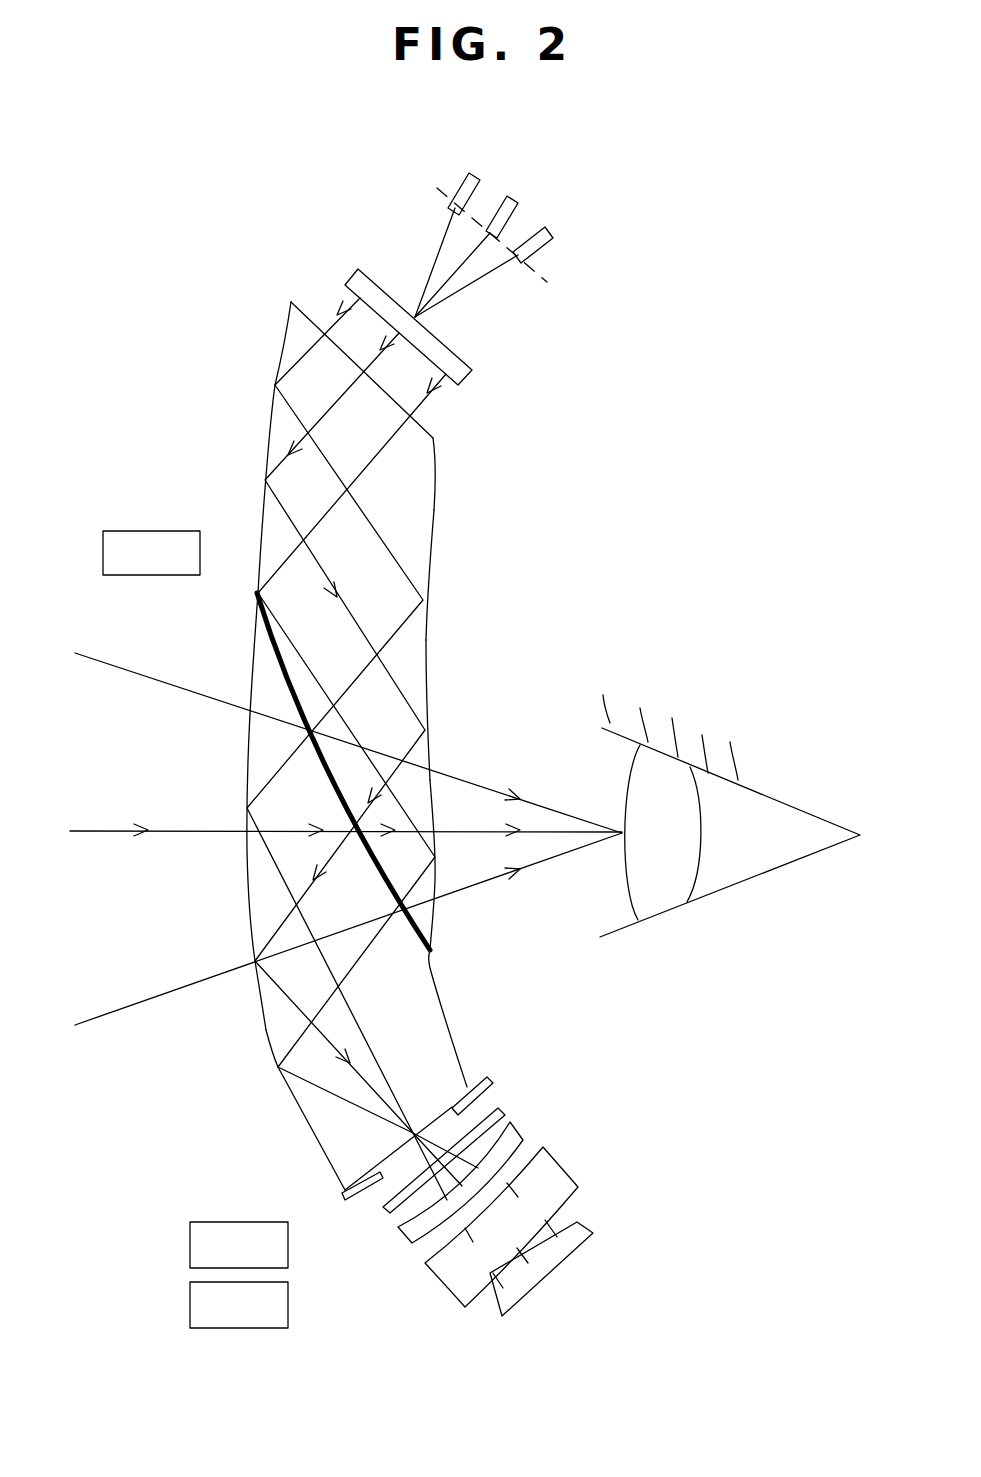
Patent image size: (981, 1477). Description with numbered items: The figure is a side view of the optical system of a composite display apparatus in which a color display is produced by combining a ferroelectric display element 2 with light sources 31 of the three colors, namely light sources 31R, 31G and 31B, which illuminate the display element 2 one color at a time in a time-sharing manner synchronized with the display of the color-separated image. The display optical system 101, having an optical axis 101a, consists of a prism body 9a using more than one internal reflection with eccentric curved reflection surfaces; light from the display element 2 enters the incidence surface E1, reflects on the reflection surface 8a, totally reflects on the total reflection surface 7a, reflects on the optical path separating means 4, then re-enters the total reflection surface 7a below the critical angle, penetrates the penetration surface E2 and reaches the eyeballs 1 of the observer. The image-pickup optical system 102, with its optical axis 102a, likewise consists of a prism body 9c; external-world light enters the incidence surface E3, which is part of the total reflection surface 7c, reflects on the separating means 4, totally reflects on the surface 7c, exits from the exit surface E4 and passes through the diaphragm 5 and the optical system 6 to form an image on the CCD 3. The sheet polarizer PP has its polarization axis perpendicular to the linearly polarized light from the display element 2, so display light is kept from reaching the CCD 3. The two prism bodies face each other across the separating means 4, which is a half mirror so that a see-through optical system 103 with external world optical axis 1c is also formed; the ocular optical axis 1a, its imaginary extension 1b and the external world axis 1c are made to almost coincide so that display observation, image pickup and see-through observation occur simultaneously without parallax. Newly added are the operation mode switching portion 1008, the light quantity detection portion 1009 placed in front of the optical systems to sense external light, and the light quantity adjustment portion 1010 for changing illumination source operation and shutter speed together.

The eyeballs 1 is at (793, 862).
The ocular optical axis 1a is at (547, 858).
The imaginary ocular optical axis 1b is at (195, 830).
The external world optical axis 1c is at (76, 832).
The ferroelectric display device 2 is at (458, 350).
The image-pickup device 3 is at (510, 1318).
The optical path separating means 4 is at (280, 678).
The diaphragm 5 is at (347, 1205).
The optical system 6 is at (522, 1102).
The total reflection surface 7a is at (428, 652).
The total reflection surface 7c is at (262, 1022).
The reflection surface 8a is at (268, 443).
The prism body 9a is at (424, 513).
The prism body 9c is at (325, 1128).
The light sources 31 is at (468, 93).
The light source 31R is at (476, 177).
The light source 31G is at (513, 199).
The light source 31B is at (548, 230).
The display optical system 101 is at (289, 631).
The optical axis 101a is at (282, 344).
The image-pickup optical system 102 is at (303, 1056).
The optical axis 102a is at (273, 938).
The see-through optical system 103 is at (331, 839).
The operation mode switching portion 1008 is at (190, 1247).
The light quantity detection portion 1009 is at (103, 565).
The light quantity adjustment portion 1010 is at (190, 1307).
The incidence surface E1 is at (436, 438).
The penetration surface E2 is at (438, 788).
The incidence surface E3 is at (246, 866).
The exit surface E4 is at (433, 1122).
The sheet polarizer PP is at (503, 1108).